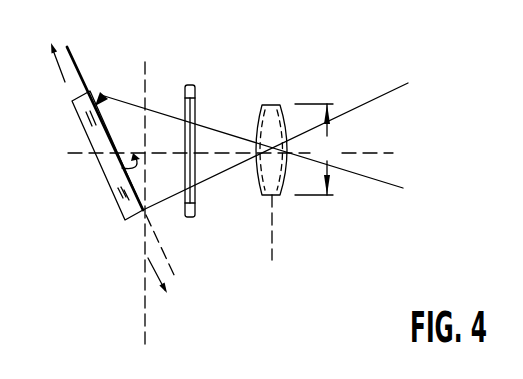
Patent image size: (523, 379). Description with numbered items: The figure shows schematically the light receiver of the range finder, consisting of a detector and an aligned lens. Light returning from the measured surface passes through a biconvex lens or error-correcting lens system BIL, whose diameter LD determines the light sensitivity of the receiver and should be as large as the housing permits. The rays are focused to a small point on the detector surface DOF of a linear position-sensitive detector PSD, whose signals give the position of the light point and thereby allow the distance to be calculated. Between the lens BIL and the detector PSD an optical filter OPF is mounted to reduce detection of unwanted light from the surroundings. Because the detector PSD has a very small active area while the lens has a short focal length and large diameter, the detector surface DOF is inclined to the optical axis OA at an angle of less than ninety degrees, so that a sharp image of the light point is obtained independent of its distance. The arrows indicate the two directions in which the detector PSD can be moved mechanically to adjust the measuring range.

The position-sensitive detector PSD is at (89, 119).
The detector surface DOF is at (104, 94).
The optical filter OPF is at (193, 88).
The biconvex lens BIL is at (270, 112).
The diameter of the lens system LD is at (315, 149).
The optical axis OA is at (244, 152).